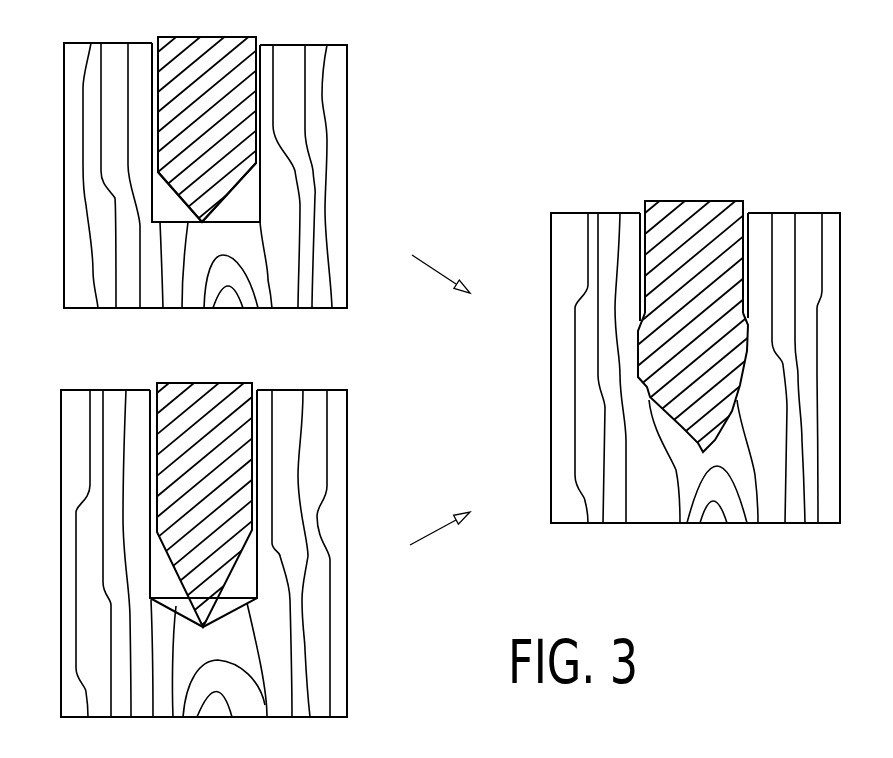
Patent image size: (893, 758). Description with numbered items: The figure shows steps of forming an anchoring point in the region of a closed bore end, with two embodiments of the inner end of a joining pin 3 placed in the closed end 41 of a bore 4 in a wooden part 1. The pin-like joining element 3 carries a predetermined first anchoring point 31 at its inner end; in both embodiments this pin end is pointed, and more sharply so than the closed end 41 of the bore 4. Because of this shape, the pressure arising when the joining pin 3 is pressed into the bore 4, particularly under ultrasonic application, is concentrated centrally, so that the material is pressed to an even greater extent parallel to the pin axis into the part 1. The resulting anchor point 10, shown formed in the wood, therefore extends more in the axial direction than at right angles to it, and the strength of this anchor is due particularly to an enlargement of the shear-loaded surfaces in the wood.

The part 1 is at (326, 78).
The joining pin 3 is at (147, 110).
The first anchoring point 31 is at (228, 152).
The bore 4 is at (260, 197).
The closed end of bore 41 is at (155, 206).
The anchor point 10 is at (758, 386).